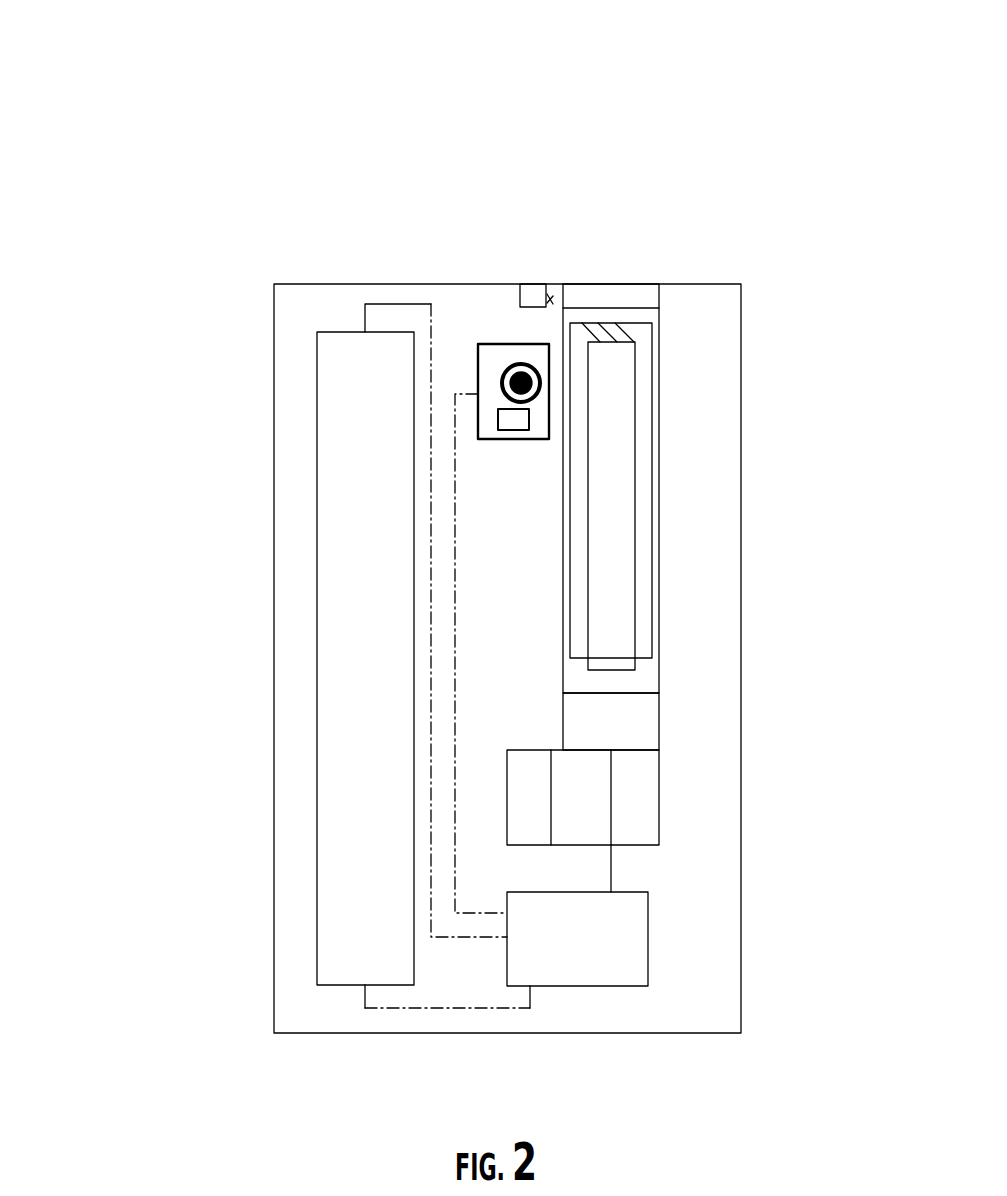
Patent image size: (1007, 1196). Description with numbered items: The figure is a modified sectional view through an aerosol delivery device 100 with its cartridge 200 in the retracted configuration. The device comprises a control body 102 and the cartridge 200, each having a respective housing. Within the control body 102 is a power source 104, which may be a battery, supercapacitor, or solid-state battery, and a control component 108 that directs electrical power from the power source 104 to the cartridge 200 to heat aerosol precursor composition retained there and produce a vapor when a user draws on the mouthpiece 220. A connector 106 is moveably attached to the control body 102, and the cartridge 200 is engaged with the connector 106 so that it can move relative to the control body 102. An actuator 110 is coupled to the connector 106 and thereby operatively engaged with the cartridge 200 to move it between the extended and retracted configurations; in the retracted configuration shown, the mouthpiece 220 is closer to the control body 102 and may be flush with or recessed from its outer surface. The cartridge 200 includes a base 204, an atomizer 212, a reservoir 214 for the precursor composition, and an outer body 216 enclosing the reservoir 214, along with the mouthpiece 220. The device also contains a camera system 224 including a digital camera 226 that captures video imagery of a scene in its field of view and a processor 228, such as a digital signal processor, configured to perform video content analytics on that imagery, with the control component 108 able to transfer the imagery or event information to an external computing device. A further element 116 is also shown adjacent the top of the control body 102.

The aerosol delivery device 100 is at (178, 108).
The control body 102 is at (275, 893).
The power source 104 is at (317, 740).
The connector 106 is at (660, 813).
The control component 108 is at (602, 986).
The actuator 110 is at (507, 757).
The power port 116 is at (536, 285).
The cartridge 200 is at (676, 518).
The base 204 is at (660, 732).
The atomizer 212 is at (633, 323).
The reservoir 214 is at (635, 585).
The outer body 216 is at (660, 492).
The mouthpiece 220 is at (607, 284).
The camera system 224 is at (478, 370).
The digital camera 226 is at (517, 363).
The processor 228 is at (511, 430).